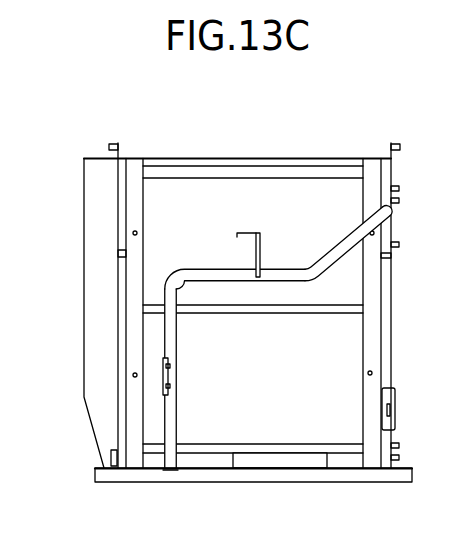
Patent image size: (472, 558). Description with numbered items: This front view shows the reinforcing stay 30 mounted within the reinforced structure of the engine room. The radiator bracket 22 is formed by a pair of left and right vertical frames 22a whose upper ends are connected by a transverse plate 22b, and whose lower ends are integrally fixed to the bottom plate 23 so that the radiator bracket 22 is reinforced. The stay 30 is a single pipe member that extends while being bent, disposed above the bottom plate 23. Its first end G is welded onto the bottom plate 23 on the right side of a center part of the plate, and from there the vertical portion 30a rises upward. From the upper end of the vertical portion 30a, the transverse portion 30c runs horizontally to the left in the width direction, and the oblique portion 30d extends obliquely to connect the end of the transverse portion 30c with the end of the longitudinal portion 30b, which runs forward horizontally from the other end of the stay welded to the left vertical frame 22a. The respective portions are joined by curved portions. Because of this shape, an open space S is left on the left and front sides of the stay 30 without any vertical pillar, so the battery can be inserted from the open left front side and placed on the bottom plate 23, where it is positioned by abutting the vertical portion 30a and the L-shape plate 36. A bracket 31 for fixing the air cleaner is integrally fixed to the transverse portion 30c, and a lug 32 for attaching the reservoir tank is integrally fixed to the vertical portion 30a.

The radiator bracket 22 is at (243, 273).
The vertical frame 22a is at (132, 183).
The transverse plate 22b is at (227, 166).
The bottom plate 23 is at (205, 469).
The reinforcing stay 30 is at (247, 334).
The vertical portion 30a is at (170, 330).
The longitudinal portion 30b is at (392, 210).
The transverse portion 30c is at (235, 283).
The oblique portion 30d is at (334, 253).
The bracket 31 is at (250, 232).
The lug 32 is at (162, 367).
The L-shape plate 36 is at (288, 462).
The first end G is at (170, 469).
The open space S is at (334, 381).